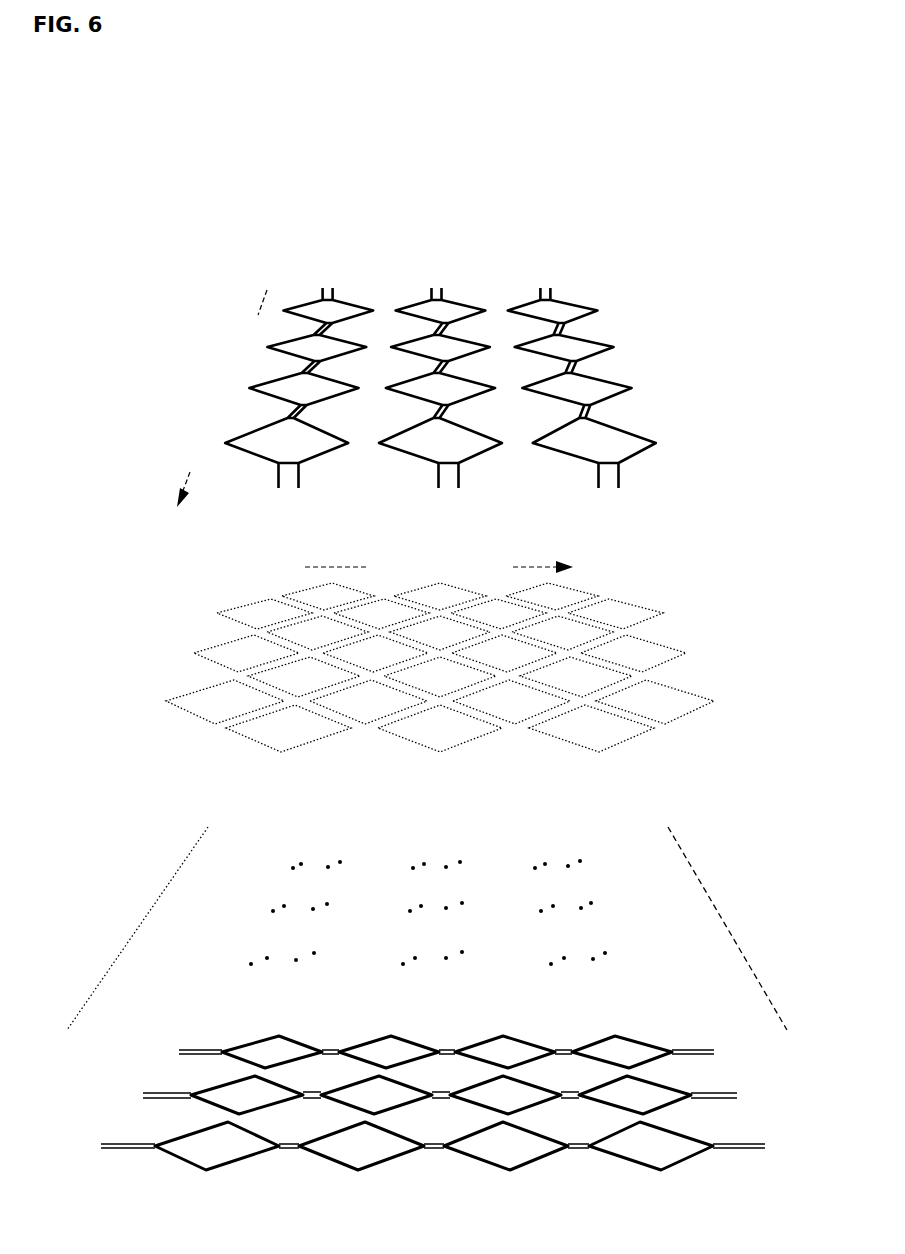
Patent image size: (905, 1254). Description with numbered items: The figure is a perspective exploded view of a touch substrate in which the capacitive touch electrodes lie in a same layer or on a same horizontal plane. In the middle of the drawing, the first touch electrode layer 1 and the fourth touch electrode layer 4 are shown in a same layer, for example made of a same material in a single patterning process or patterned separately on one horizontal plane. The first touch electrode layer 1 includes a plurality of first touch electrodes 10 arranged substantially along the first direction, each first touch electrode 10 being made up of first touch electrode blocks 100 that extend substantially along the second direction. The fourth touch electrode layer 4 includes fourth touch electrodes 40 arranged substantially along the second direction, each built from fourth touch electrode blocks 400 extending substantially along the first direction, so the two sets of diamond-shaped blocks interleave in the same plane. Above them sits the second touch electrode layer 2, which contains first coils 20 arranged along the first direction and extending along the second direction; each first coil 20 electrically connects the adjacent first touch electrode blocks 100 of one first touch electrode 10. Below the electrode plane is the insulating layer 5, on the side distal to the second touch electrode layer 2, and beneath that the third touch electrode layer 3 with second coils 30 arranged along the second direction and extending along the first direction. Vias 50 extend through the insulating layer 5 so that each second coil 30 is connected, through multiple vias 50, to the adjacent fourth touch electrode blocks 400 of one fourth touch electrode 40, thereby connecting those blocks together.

The first touch electrode layer 1 is at (418, 706).
The second touch electrode layer 2 is at (415, 434).
The third touch electrode layer 3 is at (469, 1103).
The fourth touch electrode layer 4 is at (418, 651).
The insulating layer 5 is at (453, 928).
The first touch electrode 10 is at (440, 692).
The first coil 20 is at (622, 500).
The second coil 30 is at (833, 1148).
The fourth touch electrode 40 is at (423, 651).
The via 50 is at (531, 914).
The first touch electrode block 100 is at (440, 666).
The fourth touch electrode block 400 is at (440, 661).